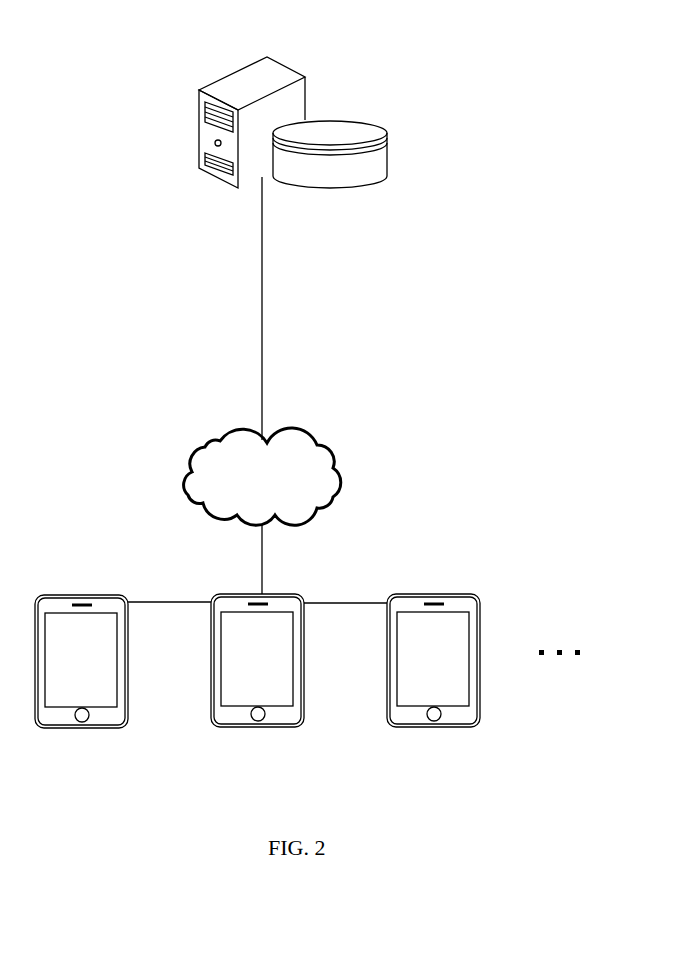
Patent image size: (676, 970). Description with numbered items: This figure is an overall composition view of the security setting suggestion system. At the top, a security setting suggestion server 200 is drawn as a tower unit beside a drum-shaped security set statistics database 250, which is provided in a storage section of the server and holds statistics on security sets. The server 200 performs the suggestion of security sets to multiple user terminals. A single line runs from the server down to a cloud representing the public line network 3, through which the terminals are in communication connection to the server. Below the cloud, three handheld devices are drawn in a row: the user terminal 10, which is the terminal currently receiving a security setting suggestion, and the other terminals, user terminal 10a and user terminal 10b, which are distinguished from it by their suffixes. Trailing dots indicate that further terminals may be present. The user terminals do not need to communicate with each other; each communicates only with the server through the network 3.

The security setting suggestion server 200 is at (267, 58).
The security set statistics database 250 is at (375, 120).
The public line network 3 is at (308, 438).
The user terminal 10 is at (130, 603).
The user terminal 10a is at (305, 603).
The user terminal 10b is at (480, 603).